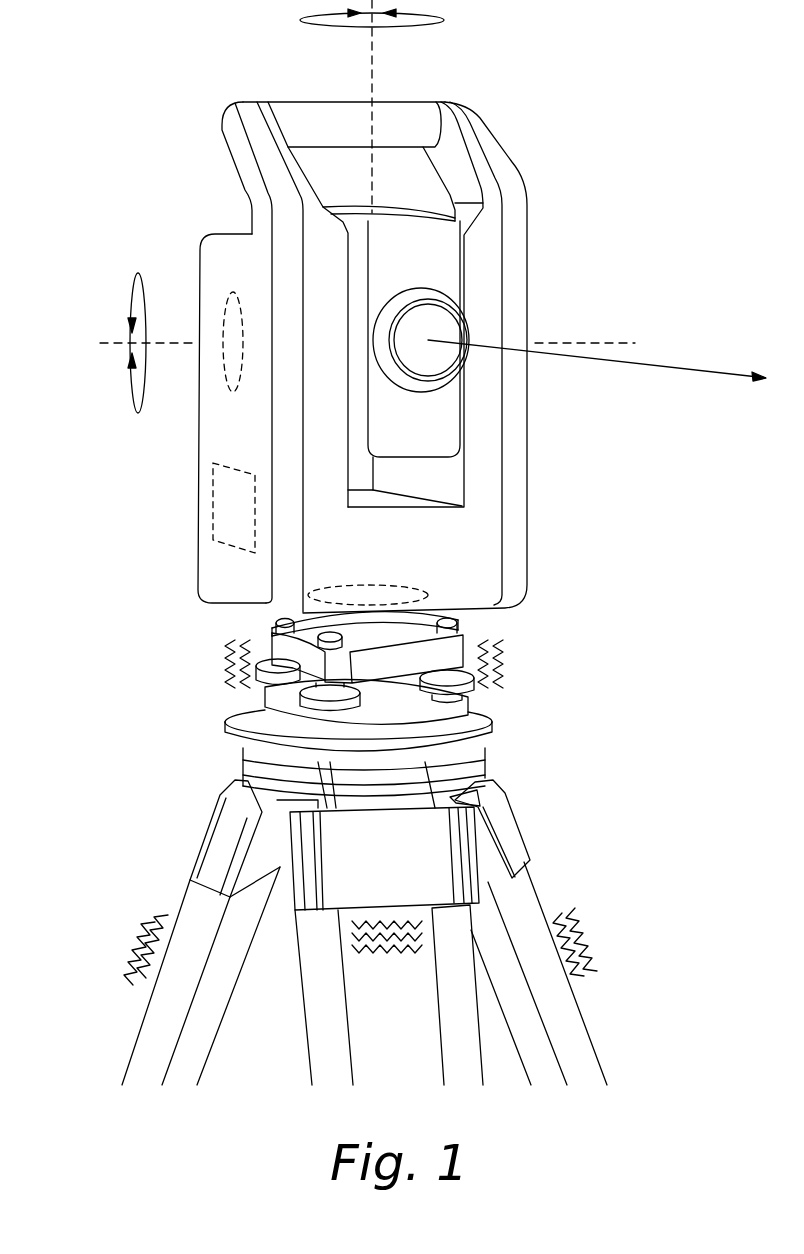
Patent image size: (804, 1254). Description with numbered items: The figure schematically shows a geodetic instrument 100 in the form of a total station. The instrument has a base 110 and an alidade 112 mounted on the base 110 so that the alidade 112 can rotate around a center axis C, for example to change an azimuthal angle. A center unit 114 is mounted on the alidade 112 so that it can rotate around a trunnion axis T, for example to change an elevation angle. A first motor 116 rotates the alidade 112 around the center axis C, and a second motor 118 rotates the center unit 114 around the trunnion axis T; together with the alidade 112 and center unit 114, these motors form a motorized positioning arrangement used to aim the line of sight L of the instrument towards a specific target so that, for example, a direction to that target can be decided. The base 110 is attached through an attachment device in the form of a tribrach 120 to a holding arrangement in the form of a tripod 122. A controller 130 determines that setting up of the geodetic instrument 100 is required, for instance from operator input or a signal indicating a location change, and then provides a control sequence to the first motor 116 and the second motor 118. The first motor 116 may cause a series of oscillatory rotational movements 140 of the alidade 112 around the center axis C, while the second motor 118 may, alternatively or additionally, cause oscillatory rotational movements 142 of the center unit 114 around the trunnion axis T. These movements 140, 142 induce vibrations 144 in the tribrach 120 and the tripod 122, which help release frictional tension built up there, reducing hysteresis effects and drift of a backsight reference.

The geodetic instrument 100 is at (556, 173).
The base 110 is at (273, 622).
The alidade 112 is at (527, 520).
The center unit 114 is at (453, 422).
The first motor 116 is at (408, 588).
The second motor 118 is at (226, 380).
The tribrach 120 is at (468, 703).
The tripod 122 is at (200, 833).
The controller 130 is at (213, 500).
The oscillatory rotational movements 140 is at (430, 25).
The oscillatory rotational movements 142 is at (135, 292).
The vibrations 144 is at (585, 937).
The center axis C is at (372, 50).
The trunnion axis T is at (598, 343).
The line of sight L is at (640, 366).